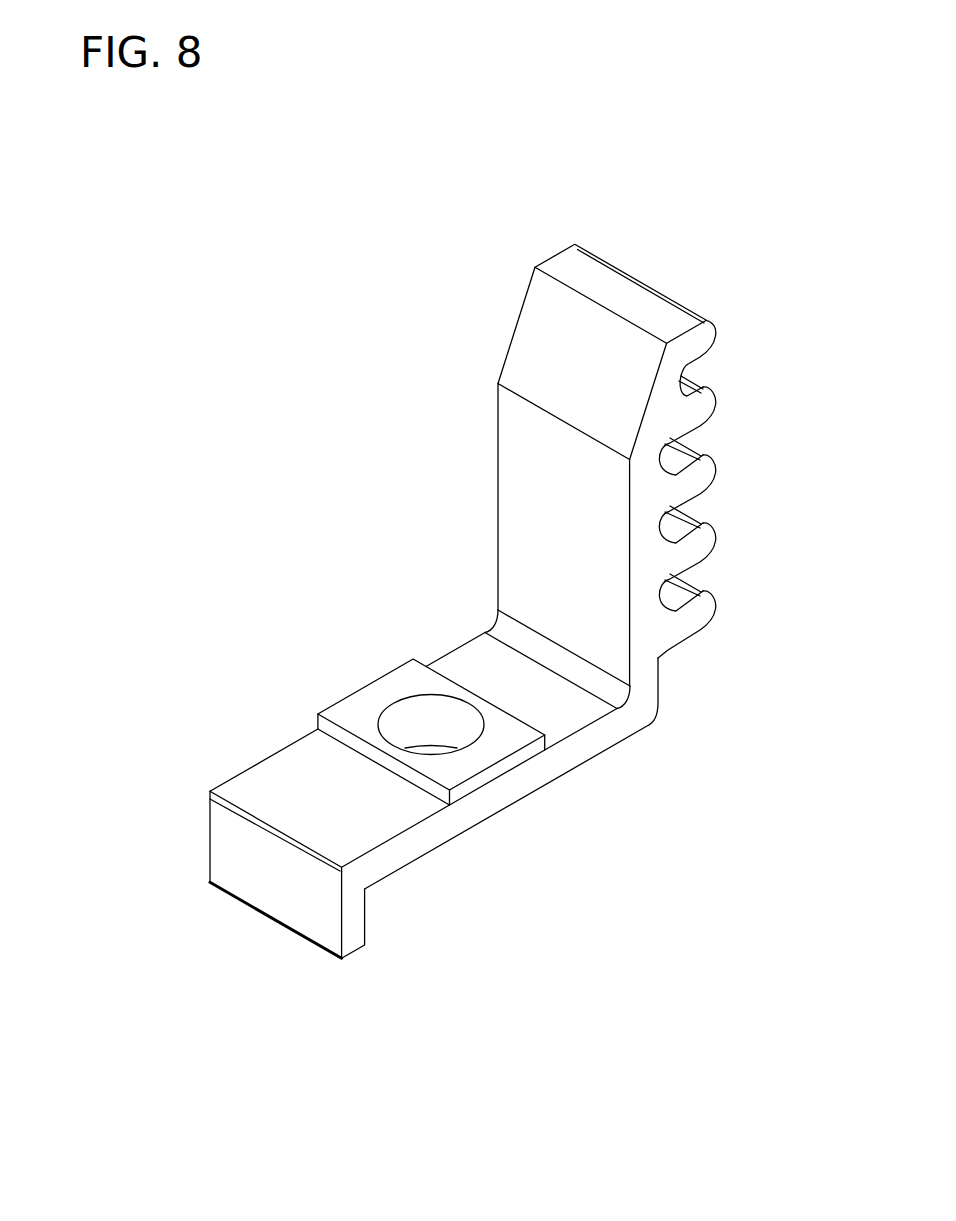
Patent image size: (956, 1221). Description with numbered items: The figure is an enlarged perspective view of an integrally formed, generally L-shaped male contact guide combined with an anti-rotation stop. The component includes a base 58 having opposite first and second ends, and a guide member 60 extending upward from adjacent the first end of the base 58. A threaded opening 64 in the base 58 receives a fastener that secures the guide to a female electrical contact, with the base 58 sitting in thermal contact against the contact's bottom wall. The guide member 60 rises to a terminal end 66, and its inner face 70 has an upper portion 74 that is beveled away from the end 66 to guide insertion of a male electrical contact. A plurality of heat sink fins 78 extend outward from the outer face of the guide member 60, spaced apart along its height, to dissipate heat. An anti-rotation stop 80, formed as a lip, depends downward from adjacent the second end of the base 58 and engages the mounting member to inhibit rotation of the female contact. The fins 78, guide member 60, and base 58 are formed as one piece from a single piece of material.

The base 58 is at (573, 746).
The guide member 60 is at (590, 434).
The threaded opening 64 is at (433, 724).
The terminal end 66 is at (596, 284).
The inner face 70 is at (538, 547).
The upper portion of the inner face 74 is at (558, 348).
The heat sink fins 78 is at (712, 338).
The anti-rotation stop 80 is at (267, 875).